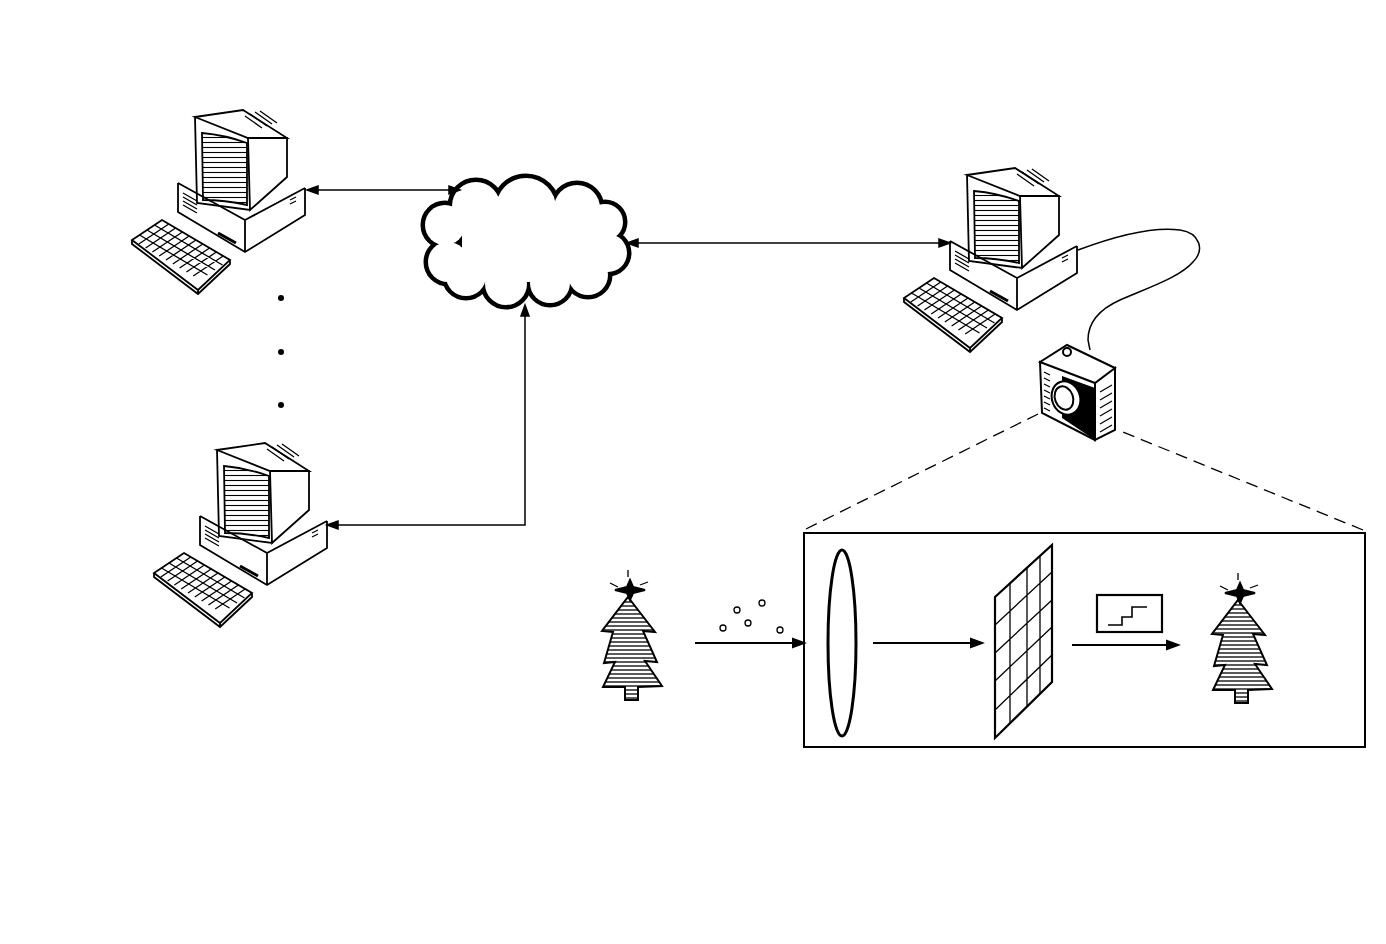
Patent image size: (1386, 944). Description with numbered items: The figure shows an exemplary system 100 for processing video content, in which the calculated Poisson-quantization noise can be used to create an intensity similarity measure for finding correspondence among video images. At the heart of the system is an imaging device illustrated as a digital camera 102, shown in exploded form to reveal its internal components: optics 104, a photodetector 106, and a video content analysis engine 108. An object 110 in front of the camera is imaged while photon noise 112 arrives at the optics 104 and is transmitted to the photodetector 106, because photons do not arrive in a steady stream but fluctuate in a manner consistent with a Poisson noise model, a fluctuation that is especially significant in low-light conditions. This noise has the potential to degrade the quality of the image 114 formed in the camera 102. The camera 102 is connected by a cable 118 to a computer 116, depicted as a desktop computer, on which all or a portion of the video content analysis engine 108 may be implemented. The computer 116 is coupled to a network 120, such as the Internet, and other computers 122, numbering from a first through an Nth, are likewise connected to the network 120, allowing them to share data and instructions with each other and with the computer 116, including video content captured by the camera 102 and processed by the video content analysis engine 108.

The system 100 is at (1146, 112).
The camera 102 is at (1120, 363).
The optics 104 is at (853, 583).
The photodetector 106 is at (993, 700).
The video content analysis engine 108 is at (1142, 595).
The scene / object being imaged 110 is at (608, 620).
The photon noise 112 is at (746, 571).
The image 114 is at (1262, 618).
The computer 116 is at (982, 172).
The camera-to-computer cable 118 is at (1200, 240).
The network 120 is at (525, 173).
The computers 122 is at (213, 350).